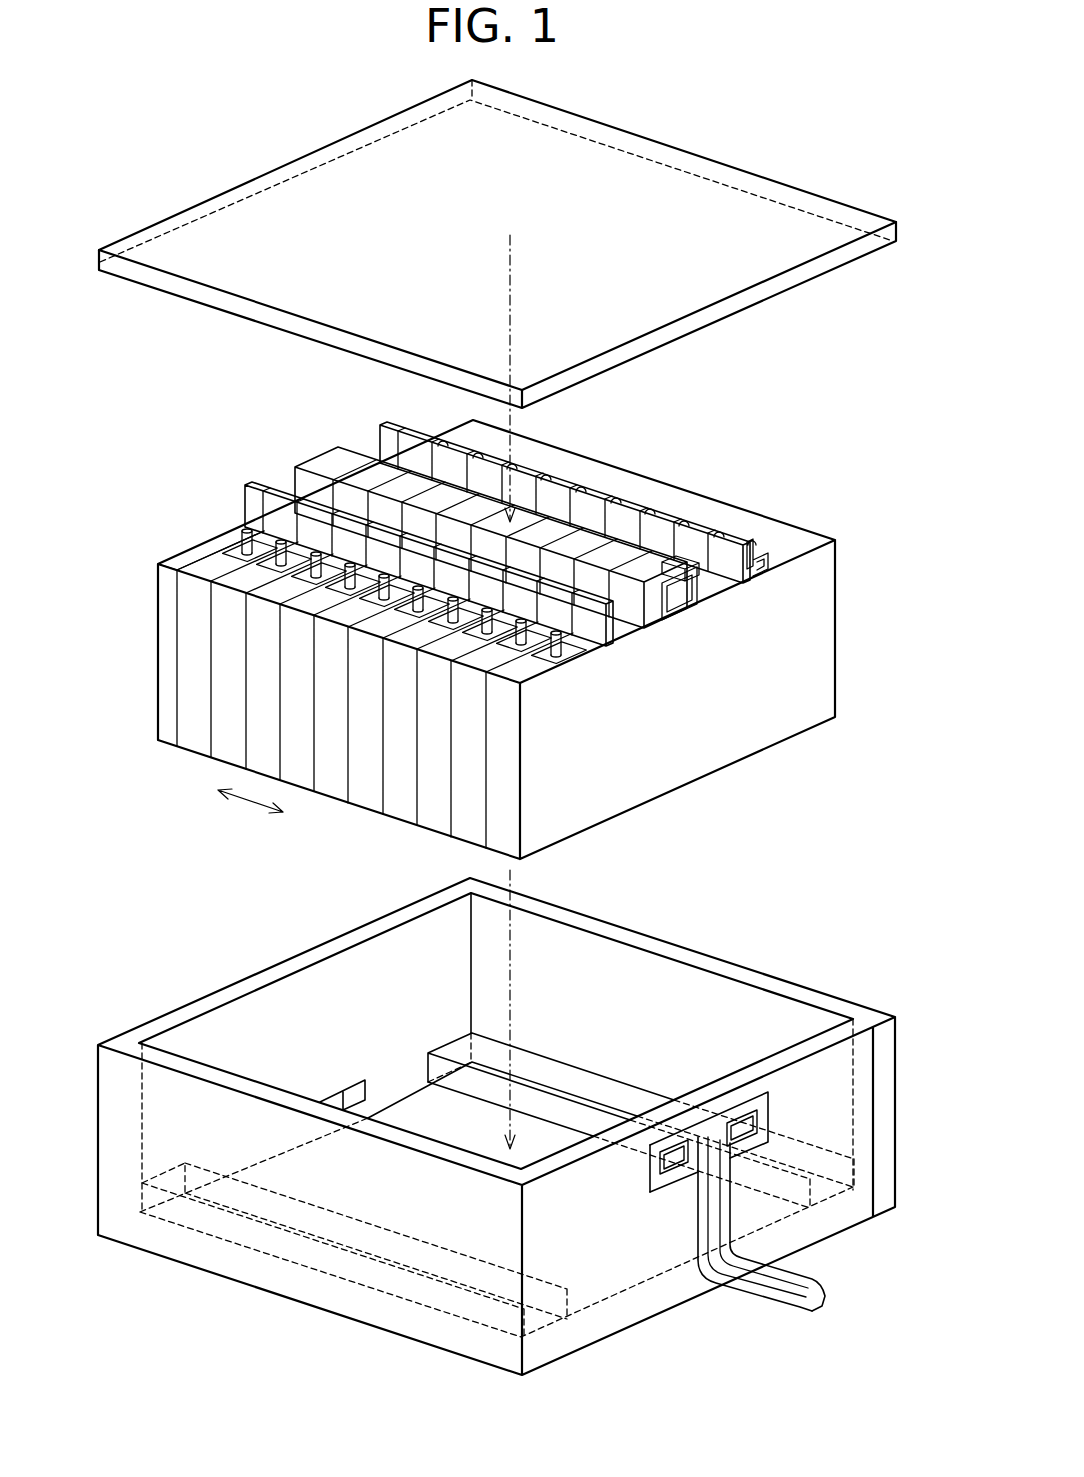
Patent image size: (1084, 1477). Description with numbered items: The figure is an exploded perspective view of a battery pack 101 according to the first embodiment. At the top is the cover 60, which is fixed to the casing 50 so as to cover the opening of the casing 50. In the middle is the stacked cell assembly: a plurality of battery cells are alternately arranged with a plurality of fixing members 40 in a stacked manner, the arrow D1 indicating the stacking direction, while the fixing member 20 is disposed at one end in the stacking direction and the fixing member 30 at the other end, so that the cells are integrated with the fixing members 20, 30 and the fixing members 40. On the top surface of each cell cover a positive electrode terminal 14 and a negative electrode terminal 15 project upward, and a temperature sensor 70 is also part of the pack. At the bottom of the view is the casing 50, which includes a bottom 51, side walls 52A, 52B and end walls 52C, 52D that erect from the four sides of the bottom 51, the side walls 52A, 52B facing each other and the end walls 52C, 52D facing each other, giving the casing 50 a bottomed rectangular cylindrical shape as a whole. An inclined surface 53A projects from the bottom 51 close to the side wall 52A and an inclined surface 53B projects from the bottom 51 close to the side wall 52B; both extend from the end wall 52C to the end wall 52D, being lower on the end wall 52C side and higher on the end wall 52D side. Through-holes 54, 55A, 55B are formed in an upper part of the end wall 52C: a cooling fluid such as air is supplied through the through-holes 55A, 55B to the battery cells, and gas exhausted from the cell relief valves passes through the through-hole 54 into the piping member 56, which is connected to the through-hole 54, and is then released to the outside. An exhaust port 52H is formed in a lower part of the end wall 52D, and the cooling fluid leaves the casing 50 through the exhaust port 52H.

The battery pack 101 is at (194, 139).
The cover 60 is at (737, 335).
The fixing member 20 is at (490, 647).
The fixing member 30 is at (168, 720).
The fixing member 40 is at (331, 775).
The positive electrode terminal 14 is at (562, 638).
The temperature sensor 70 is at (677, 568).
The negative electrode terminal 15 is at (753, 550).
The stacking direction D1 is at (250, 802).
The casing 50 is at (503, 1115).
The bottom 51 is at (425, 1127).
The side wall 52A is at (330, 1205).
The side wall 52B is at (622, 1030).
The end wall 52C is at (645, 1230).
The end wall 52D is at (295, 1073).
The exhaust port 52H is at (343, 1092).
The inclined surface 53A is at (240, 1205).
The inclined surface 53B is at (490, 1060).
The through-hole 54 is at (779, 1230).
The through-hole 55A is at (673, 1162).
The through-hole 55B is at (740, 1123).
The piping member 56 is at (773, 1282).